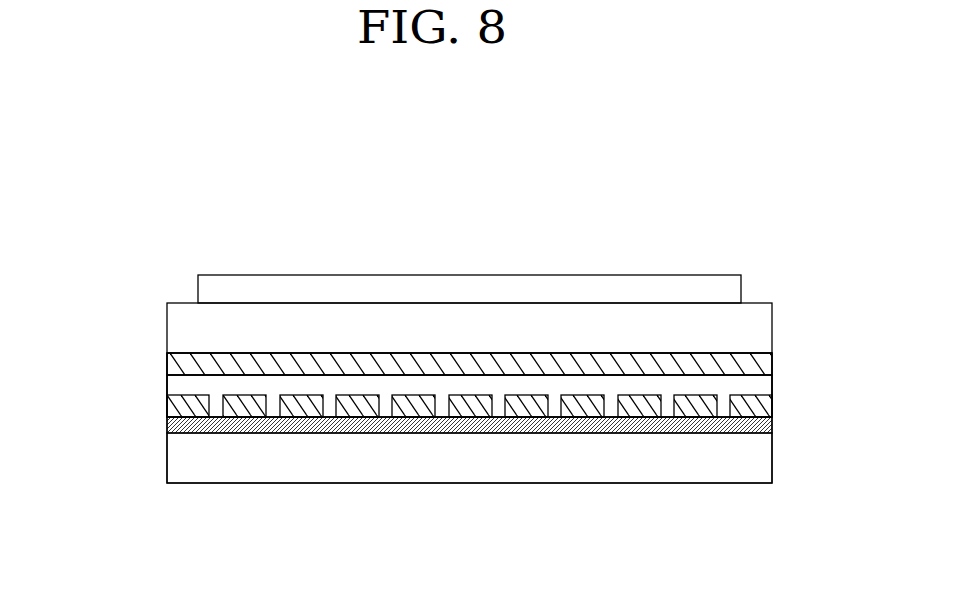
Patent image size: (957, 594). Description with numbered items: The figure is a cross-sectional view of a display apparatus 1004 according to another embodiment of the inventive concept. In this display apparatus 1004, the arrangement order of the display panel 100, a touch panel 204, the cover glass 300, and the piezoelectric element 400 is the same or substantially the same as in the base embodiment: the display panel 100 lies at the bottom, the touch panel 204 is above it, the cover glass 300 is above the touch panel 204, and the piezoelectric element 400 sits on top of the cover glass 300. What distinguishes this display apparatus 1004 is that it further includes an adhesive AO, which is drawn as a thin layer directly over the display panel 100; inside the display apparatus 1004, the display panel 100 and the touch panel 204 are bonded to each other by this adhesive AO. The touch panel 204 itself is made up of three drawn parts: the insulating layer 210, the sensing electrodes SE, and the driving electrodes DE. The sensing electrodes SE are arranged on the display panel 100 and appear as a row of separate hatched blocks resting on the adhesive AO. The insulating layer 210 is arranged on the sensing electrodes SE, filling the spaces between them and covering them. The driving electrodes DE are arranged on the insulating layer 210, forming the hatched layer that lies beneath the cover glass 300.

The display apparatus 1004 is at (704, 214).
The piezoelectric element 400 is at (198, 289).
The cover glass 300 is at (173, 329).
The touch panel 204 is at (82, 357).
The driving electrodes DE is at (173, 362).
The insulating layer 210 is at (173, 383).
The sensing electrodes SE is at (173, 404).
The adhesive AO is at (772, 423).
The display panel 100 is at (173, 458).